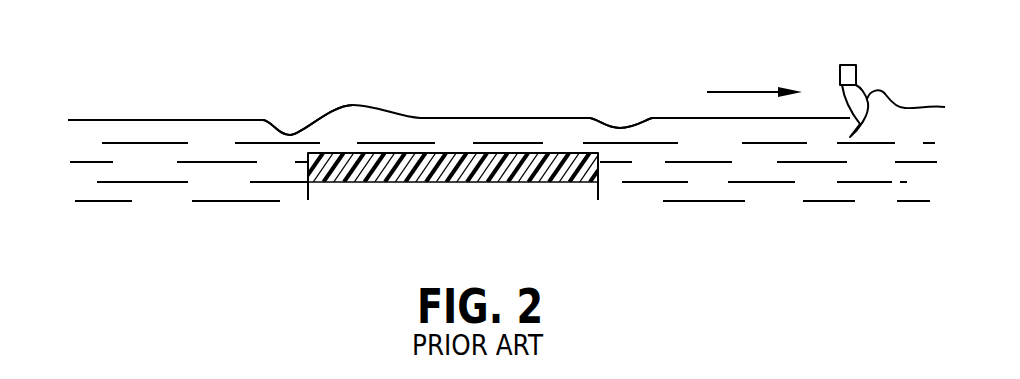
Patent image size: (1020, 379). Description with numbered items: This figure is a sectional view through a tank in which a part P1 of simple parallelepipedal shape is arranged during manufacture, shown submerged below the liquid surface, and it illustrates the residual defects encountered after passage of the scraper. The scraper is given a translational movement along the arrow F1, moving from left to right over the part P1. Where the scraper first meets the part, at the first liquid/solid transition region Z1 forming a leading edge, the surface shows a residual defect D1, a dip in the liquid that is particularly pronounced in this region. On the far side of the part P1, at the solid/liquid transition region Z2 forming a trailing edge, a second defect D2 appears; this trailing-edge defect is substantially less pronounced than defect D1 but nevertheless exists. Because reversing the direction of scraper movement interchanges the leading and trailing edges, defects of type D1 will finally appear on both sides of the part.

The residual defect at leading edge D1 is at (284, 108).
The defect at trailing edge D2 is at (622, 106).
The arrow of scraper translational movement F1 is at (754, 75).
The part P1 is at (461, 189).
The first liquid/solid transition region Z1 is at (278, 165).
The solid/liquid transition region Z2 is at (615, 158).